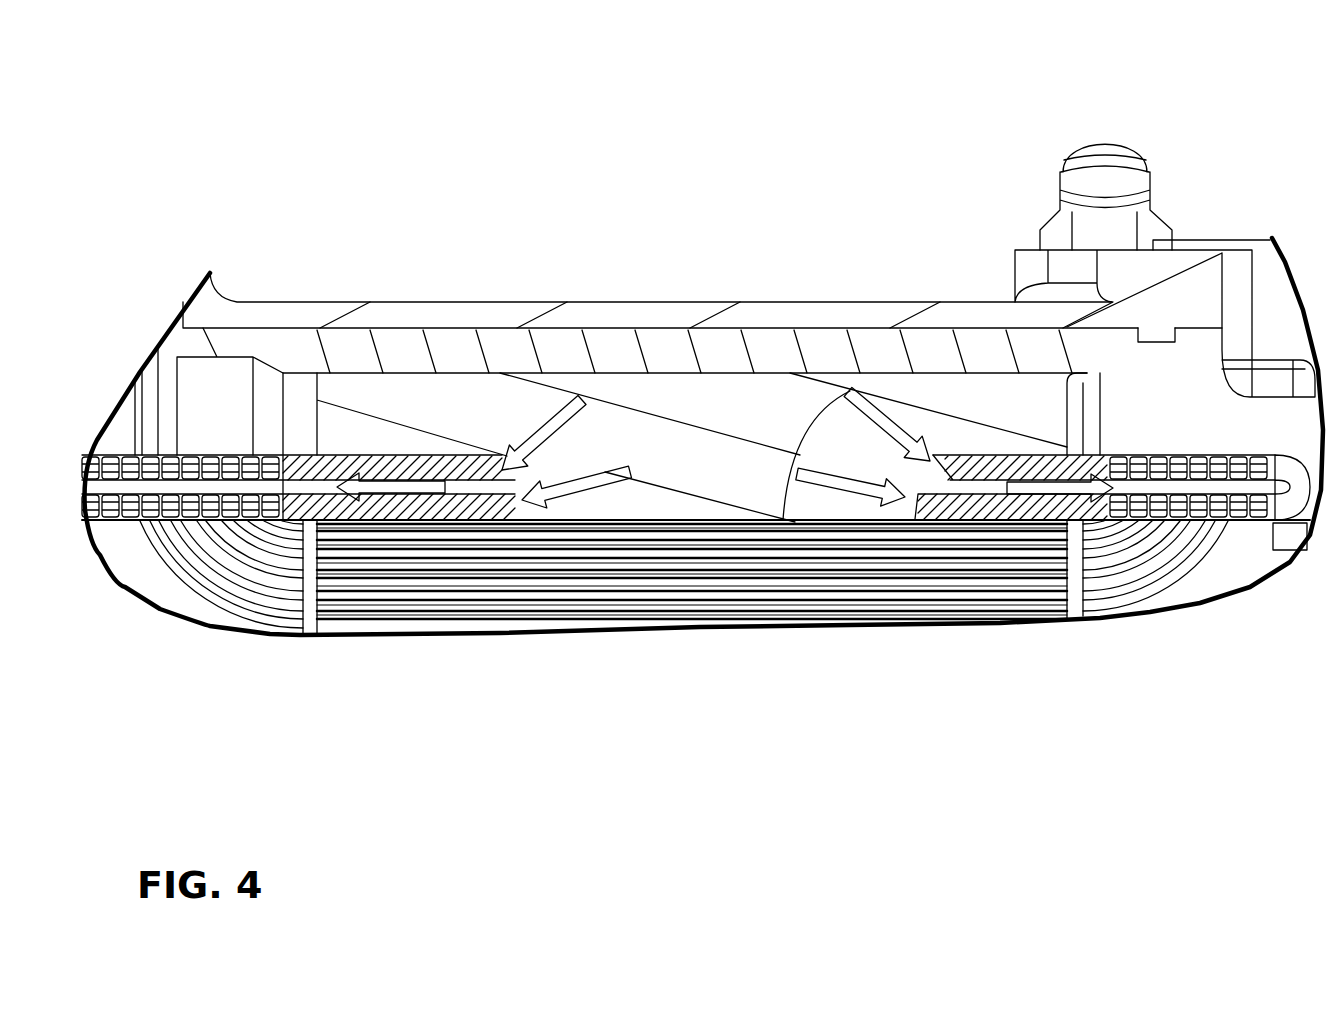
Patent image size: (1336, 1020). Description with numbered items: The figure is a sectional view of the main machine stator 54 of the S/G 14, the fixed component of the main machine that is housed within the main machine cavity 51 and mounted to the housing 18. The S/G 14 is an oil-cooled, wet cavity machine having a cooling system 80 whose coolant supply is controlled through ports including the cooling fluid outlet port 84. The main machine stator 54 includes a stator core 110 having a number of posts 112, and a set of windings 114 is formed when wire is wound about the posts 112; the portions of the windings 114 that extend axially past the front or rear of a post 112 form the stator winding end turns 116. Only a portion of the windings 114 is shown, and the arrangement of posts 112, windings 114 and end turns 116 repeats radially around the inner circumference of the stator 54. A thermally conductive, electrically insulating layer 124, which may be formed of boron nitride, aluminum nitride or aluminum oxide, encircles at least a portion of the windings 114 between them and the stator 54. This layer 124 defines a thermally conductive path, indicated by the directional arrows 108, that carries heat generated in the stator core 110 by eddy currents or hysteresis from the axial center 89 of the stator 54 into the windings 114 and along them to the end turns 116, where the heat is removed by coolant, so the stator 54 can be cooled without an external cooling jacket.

The S/G 14 is at (667, 243).
The housing 18 is at (400, 312).
The main machine cavity 51 is at (224, 424).
The main machine stator 54 is at (543, 408).
The cooling system 80 is at (193, 398).
The cooling fluid outlet port 84 is at (1105, 177).
The axial center 89 is at (733, 431).
The directional arrows 108 is at (612, 462).
The stator core 110 is at (783, 513).
The posts 112 is at (812, 517).
The windings 114 is at (1000, 492).
The stator winding end turns 116 is at (165, 593).
The thermally conductive, electrically insulating layer 124 is at (527, 492).